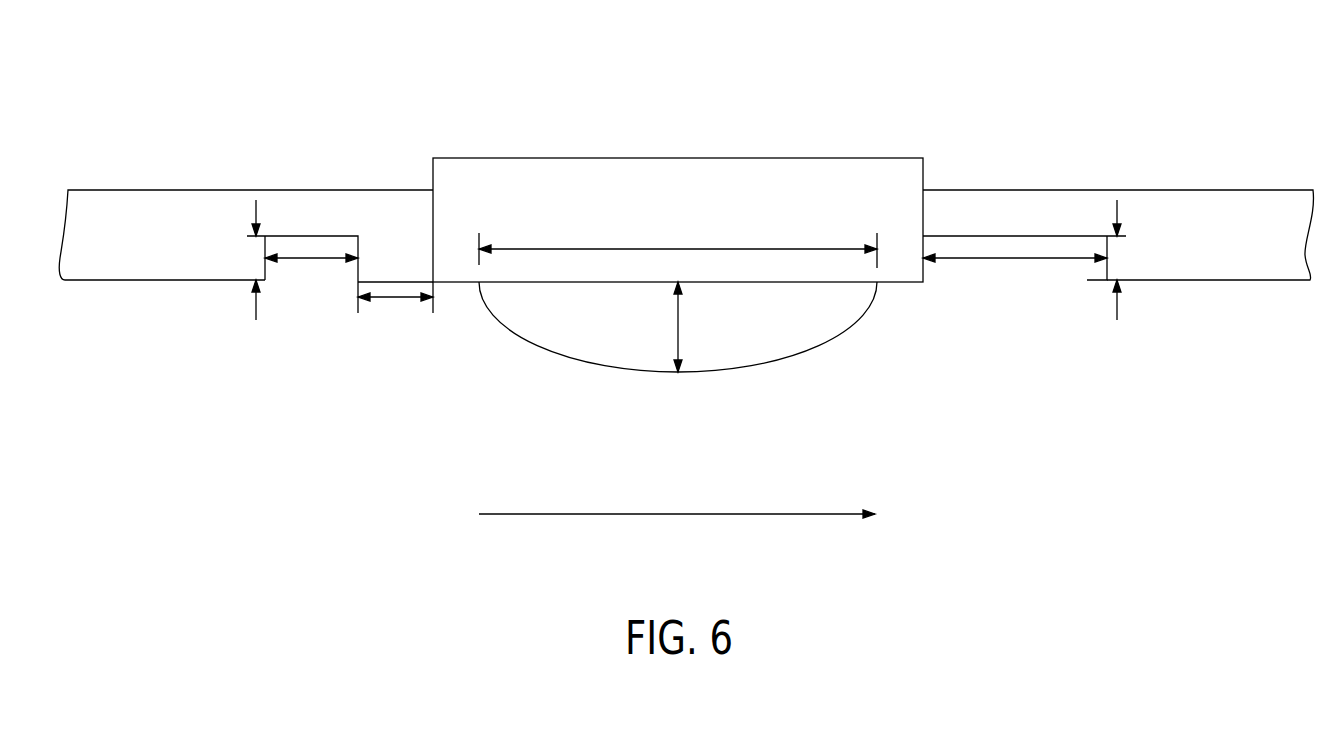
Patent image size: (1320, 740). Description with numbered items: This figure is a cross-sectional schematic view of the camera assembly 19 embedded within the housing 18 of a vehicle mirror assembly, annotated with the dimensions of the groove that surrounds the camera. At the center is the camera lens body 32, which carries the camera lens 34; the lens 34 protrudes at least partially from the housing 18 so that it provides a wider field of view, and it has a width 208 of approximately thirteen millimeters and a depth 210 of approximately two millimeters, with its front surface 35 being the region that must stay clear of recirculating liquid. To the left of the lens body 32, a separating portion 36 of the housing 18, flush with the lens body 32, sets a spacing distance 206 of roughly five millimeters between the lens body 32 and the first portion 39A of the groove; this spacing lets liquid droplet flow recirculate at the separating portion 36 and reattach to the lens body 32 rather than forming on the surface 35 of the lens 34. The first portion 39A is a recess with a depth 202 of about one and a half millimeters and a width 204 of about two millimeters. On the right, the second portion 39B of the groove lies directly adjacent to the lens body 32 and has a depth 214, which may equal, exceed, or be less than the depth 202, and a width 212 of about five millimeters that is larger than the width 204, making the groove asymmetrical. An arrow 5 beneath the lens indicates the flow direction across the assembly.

The flow direction 5 is at (650, 512).
The housing 18 is at (105, 205).
The camera assembly 19 is at (853, 115).
The camera lens body 32 is at (480, 170).
The camera lens 34 is at (523, 323).
The surface of the lens 35 is at (688, 375).
The separating portion 36 is at (395, 265).
The first portion of the groove 39A is at (296, 322).
The second portion of the groove 39B is at (1010, 290).
The depth of the first portion 202 is at (257, 312).
The width of the first portion 204 is at (310, 260).
The spacing distance 206 is at (395, 300).
The width of the lens 208 is at (690, 247).
The depth of the lens 210 is at (677, 328).
The width of the second portion 212 is at (988, 258).
The depth of the second portion 214 is at (1118, 317).